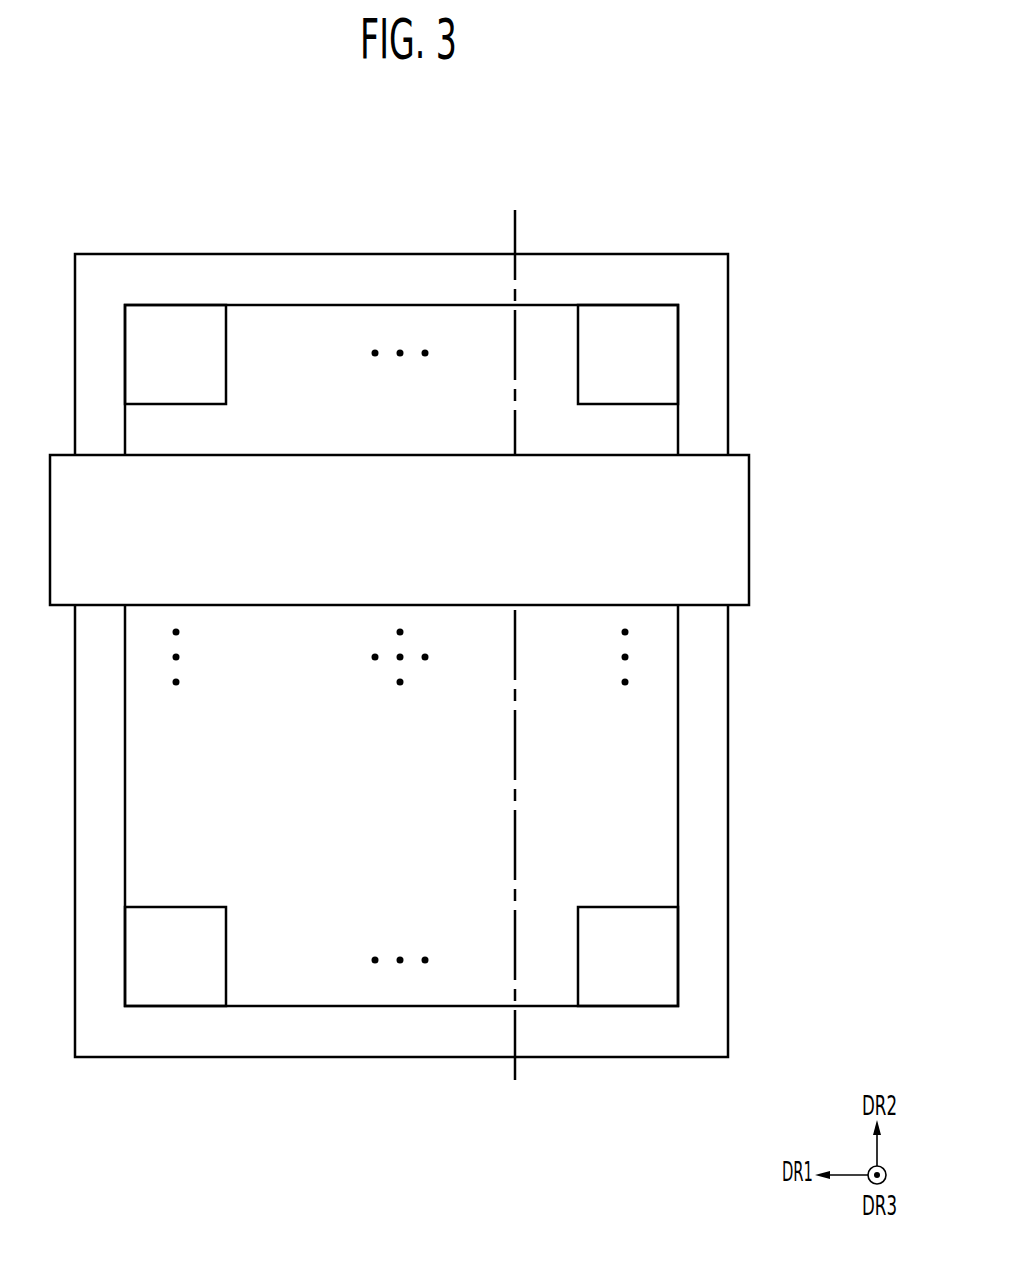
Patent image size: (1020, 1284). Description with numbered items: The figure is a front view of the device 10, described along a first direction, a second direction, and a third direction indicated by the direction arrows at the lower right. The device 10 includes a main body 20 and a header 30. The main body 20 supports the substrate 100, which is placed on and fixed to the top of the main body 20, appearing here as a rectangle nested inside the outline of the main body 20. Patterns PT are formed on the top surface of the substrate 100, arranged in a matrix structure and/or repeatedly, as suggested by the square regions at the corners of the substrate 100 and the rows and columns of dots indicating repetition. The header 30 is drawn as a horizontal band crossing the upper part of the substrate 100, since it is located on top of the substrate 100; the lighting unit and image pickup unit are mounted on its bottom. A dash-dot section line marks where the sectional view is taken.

The device 10 is at (745, 149).
The main body 20 is at (729, 880).
The substrate 100 is at (679, 737).
The patterns PT is at (660, 351).
The header 30 is at (749, 493).